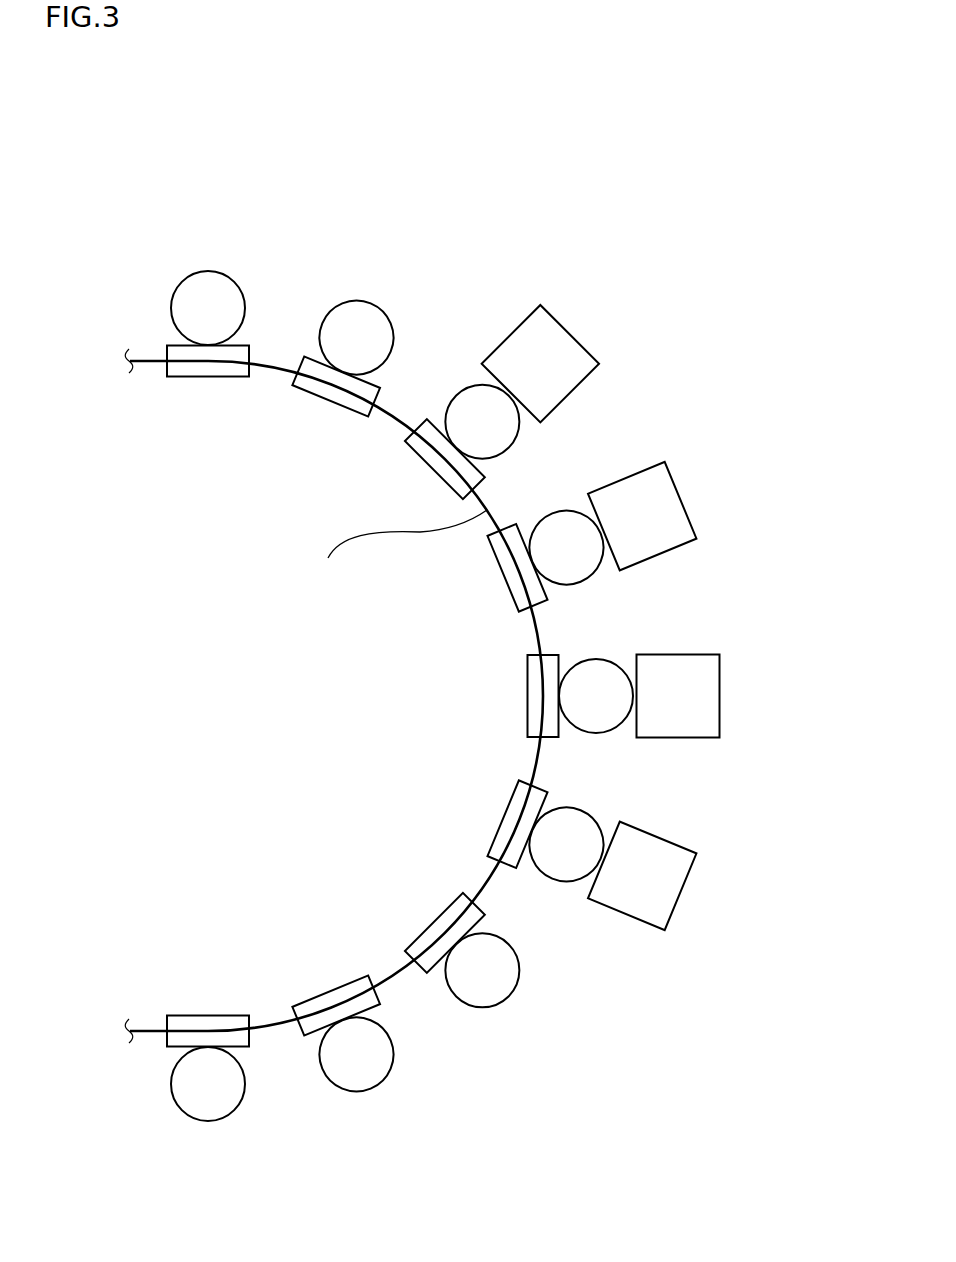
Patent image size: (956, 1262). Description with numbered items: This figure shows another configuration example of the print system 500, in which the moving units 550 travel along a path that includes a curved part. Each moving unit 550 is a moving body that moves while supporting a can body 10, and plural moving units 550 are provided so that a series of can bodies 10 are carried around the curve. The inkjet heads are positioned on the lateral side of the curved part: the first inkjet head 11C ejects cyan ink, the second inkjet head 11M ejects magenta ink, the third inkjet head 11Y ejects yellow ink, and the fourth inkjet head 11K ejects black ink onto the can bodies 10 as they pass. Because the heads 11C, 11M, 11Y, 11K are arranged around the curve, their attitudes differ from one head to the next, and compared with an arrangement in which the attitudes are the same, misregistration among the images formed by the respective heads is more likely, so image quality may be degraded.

The print system 500 is at (603, 130).
The moving unit 550 is at (437, 363).
The can body 10 is at (578, 582).
The first inkjet head 11C is at (566, 331).
The second inkjet head 11M is at (680, 494).
The third inkjet head 11Y is at (720, 694).
The fourth inkjet head 11K is at (681, 889).